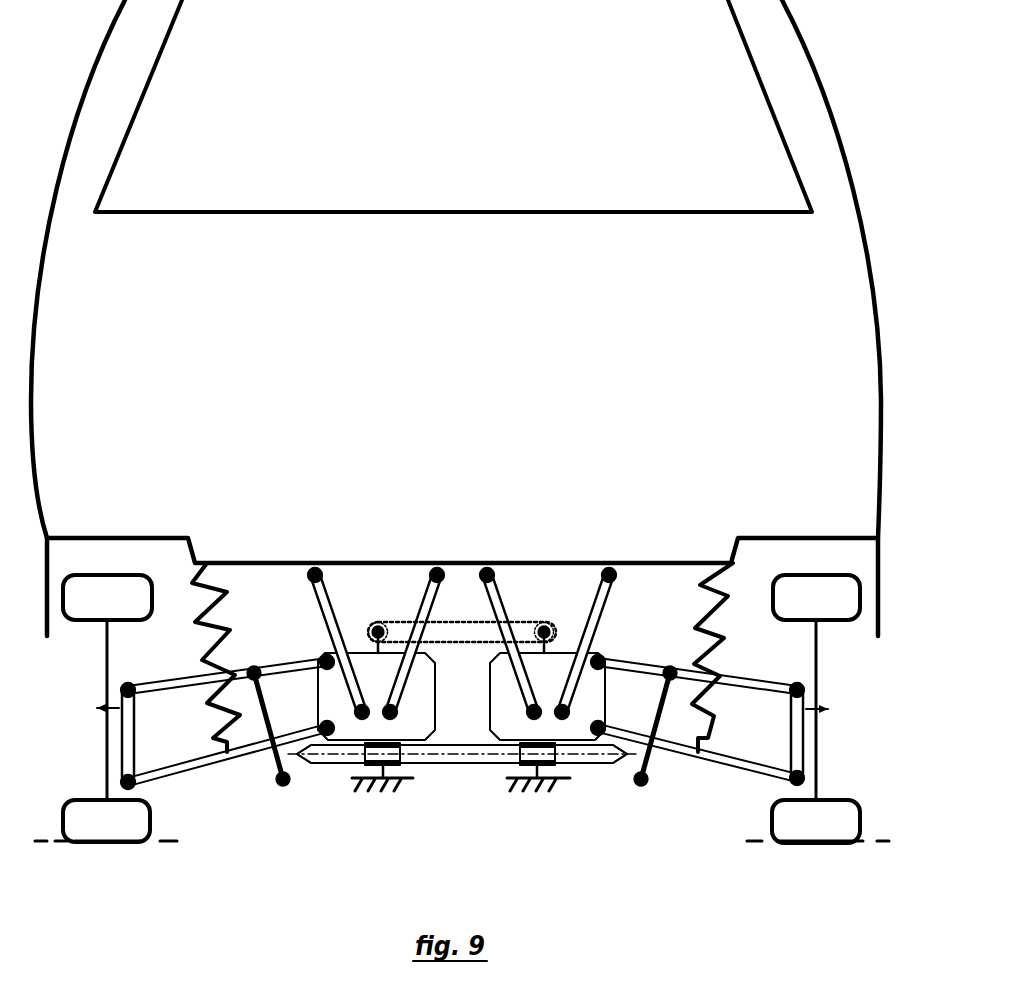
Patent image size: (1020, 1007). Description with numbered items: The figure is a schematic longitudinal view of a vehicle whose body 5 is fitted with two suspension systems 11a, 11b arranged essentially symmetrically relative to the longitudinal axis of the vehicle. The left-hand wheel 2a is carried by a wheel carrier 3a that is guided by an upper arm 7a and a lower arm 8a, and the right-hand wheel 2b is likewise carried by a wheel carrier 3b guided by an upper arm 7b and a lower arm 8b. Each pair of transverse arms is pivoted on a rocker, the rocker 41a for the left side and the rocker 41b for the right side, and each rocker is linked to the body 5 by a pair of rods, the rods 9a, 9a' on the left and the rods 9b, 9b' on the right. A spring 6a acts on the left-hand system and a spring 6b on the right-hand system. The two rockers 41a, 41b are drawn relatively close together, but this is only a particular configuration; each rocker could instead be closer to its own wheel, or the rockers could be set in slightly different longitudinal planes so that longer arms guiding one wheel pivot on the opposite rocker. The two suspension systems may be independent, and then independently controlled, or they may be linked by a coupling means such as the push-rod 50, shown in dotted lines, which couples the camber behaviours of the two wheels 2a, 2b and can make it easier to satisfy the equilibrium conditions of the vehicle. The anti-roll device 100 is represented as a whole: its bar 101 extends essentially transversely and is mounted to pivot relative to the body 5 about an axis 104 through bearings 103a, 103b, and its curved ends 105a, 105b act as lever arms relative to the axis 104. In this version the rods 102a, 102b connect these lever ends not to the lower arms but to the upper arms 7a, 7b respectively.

The body 5 is at (463, 445).
The left-hand wheel 2a is at (107, 652).
The right-hand wheel 2b is at (817, 652).
The wheel carrier 3a is at (134, 735).
The wheel carrier 3b is at (791, 735).
The spring 6a is at (207, 660).
The spring 6b is at (722, 660).
The upper arm 7a is at (170, 689).
The upper arm 7b is at (760, 686).
The lower arm 8a is at (166, 777).
The lower arm 8b is at (746, 780).
The rod 9a is at (339, 644).
The rod 9a' is at (412, 644).
The rod 9b is at (511, 644).
The rod 9b' is at (586, 644).
The rocker 41a is at (363, 665).
The rocker 41b is at (560, 662).
The push-rod 50 is at (460, 633).
The anti-roll device 100 is at (392, 873).
The bar 101 is at (467, 752).
The rod 102a is at (280, 768).
The rod 102b is at (643, 767).
The bearing 103a is at (403, 762).
The bearing 103b is at (515, 764).
The axis 104 is at (592, 757).
The curved end 105a is at (301, 768).
The curved end 105b is at (625, 768).
The suspension system 11a is at (265, 836).
The suspension system 11b is at (650, 855).